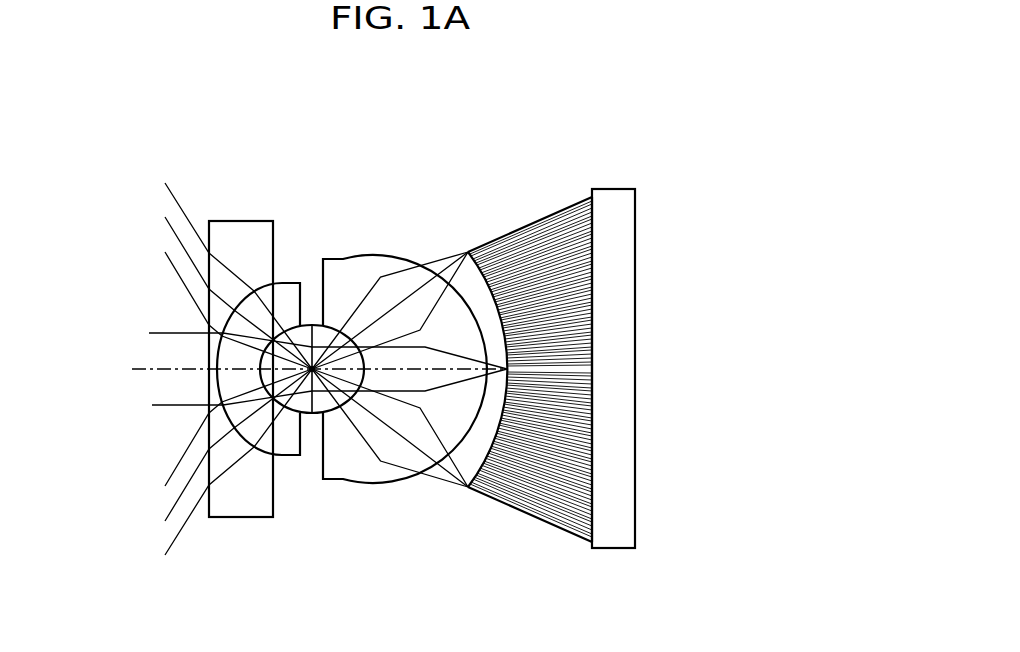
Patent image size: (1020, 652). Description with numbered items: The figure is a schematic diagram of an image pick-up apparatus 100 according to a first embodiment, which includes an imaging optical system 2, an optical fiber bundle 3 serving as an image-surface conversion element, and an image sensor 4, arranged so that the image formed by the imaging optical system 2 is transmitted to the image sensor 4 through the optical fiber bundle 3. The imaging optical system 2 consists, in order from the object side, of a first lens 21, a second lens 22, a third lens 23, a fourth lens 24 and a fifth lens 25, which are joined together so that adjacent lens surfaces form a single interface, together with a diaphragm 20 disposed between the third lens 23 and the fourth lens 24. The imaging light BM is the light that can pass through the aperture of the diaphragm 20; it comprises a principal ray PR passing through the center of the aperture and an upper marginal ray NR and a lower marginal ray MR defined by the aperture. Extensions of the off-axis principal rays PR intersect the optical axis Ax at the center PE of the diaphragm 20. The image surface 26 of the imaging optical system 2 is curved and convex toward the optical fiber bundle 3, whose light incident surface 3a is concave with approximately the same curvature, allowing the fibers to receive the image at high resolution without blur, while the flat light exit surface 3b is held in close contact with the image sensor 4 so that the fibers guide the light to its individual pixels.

The image pick-up apparatus 100 is at (164, 86).
The imaging optical system 2 is at (412, 127).
The first lens 21 is at (237, 237).
The second lens 22 is at (272, 221).
The third lens 23 is at (287, 291).
The diaphragm 20 is at (308, 331).
The fourth lens 24 is at (331, 321).
The fifth lens 25 is at (367, 284).
The image surface 26 is at (489, 287).
The optical fiber bundle 3 is at (510, 233).
The light incident surface 3a is at (501, 322).
The light exit surface 3b is at (594, 443).
The image sensor 4 is at (593, 210).
The optical axis Ax is at (136, 368).
The upper marginal ray NR is at (178, 464).
The imaging light BM is at (158, 467).
The lower marginal ray MR is at (186, 521).
The principal ray PR is at (173, 507).
The center of the diaphragm PE is at (315, 372).